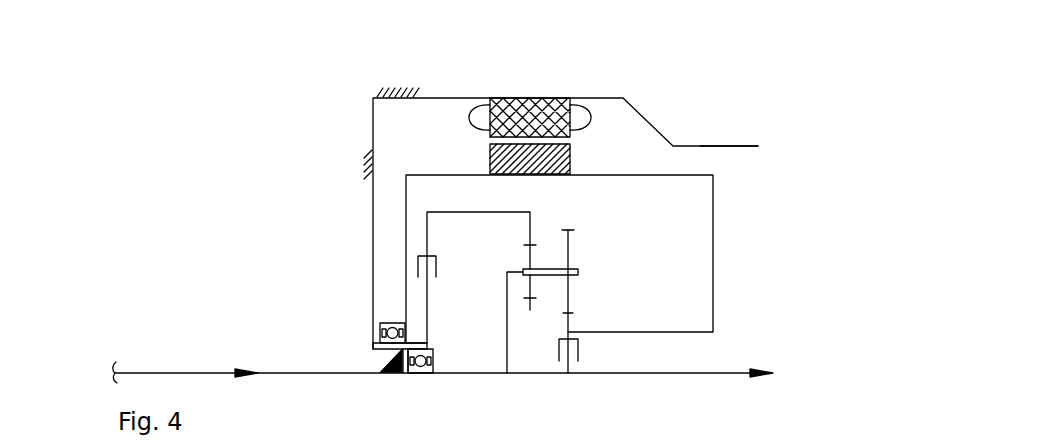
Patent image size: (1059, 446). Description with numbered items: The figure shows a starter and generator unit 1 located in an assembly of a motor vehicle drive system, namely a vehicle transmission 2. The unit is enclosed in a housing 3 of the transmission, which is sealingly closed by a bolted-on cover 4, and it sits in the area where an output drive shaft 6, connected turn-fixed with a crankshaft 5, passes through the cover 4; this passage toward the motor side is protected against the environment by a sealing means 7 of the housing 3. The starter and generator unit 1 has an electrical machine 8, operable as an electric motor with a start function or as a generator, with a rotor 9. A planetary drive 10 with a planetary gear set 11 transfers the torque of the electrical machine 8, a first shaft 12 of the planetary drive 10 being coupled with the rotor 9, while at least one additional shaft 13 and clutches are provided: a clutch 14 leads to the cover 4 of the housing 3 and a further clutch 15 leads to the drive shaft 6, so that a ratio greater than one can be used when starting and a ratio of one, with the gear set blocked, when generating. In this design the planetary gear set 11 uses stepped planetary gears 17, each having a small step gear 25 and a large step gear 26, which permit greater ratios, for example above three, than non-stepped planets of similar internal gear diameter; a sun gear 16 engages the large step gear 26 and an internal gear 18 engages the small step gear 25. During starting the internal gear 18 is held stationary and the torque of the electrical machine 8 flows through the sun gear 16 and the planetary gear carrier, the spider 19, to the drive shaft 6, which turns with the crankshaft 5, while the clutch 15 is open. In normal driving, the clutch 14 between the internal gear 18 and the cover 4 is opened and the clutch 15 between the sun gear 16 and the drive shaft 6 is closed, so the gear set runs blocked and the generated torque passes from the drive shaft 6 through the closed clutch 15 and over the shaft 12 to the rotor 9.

The starter and generator unit 1 is at (575, 170).
The vehicle transmission 2 is at (734, 253).
The housing 3 is at (705, 146).
The cover 4 is at (372, 134).
The crankshaft 5 is at (172, 372).
The drive shaft 6 is at (458, 376).
The sealing means 7 is at (407, 376).
The electrical machine 8 is at (558, 111).
The rotor 9 is at (490, 160).
The planetary drive 10 is at (427, 228).
The planetary gear set 11 is at (531, 227).
The first shaft 12 is at (716, 186).
The additional shaft 13 is at (478, 212).
The clutch 14 is at (435, 268).
The clutch 15 is at (579, 352).
The sun gear 16 is at (572, 314).
The stepped planetary gears 17 is at (569, 247).
The internal gear 18 is at (526, 244).
The spider 19 is at (507, 318).
The small step gear 25 is at (533, 309).
The large step gear 26 is at (570, 231).